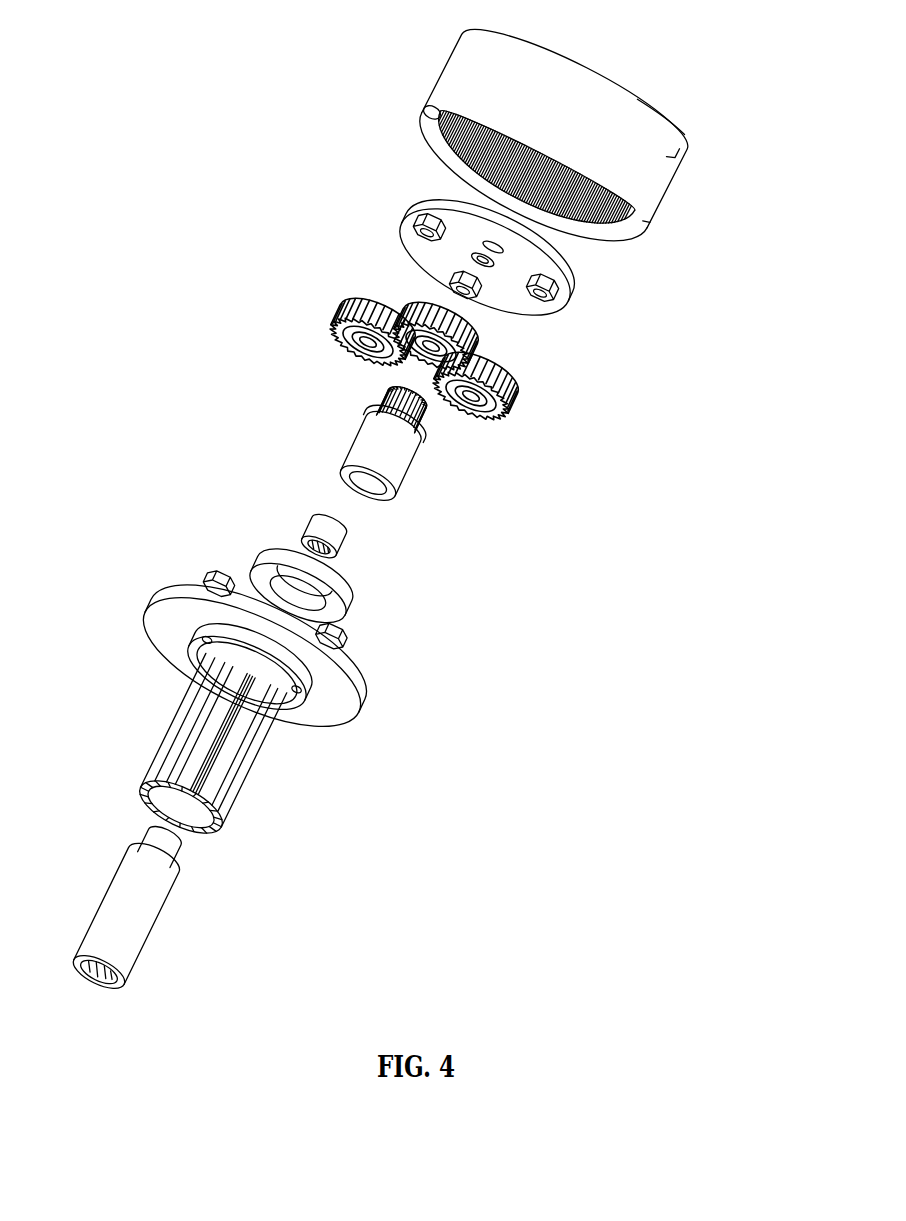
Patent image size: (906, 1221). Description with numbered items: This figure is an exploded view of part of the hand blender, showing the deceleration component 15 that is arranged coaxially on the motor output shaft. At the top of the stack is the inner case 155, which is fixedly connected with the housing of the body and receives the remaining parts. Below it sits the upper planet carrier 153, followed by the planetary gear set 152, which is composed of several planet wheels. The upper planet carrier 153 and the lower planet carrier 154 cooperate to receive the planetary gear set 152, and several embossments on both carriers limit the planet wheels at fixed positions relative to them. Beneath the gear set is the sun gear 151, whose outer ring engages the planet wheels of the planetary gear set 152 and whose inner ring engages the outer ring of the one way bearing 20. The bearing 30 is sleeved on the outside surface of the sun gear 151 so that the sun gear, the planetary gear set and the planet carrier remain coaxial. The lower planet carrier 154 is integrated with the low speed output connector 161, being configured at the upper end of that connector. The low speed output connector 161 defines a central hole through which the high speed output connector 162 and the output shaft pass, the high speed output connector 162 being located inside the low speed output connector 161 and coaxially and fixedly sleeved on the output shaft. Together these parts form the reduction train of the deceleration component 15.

The deceleration component 15 is at (513, 743).
The one way bearing 20 is at (327, 533).
The bearing 30 is at (264, 544).
The sun gear 151 is at (400, 453).
The planetary gear set 152 is at (520, 370).
The upper planet carrier 153 is at (560, 298).
The lower planet carrier 154 is at (332, 645).
The inner case 155 is at (593, 127).
The low speed output connector 161 is at (240, 763).
The high speed output connector 162 is at (137, 923).